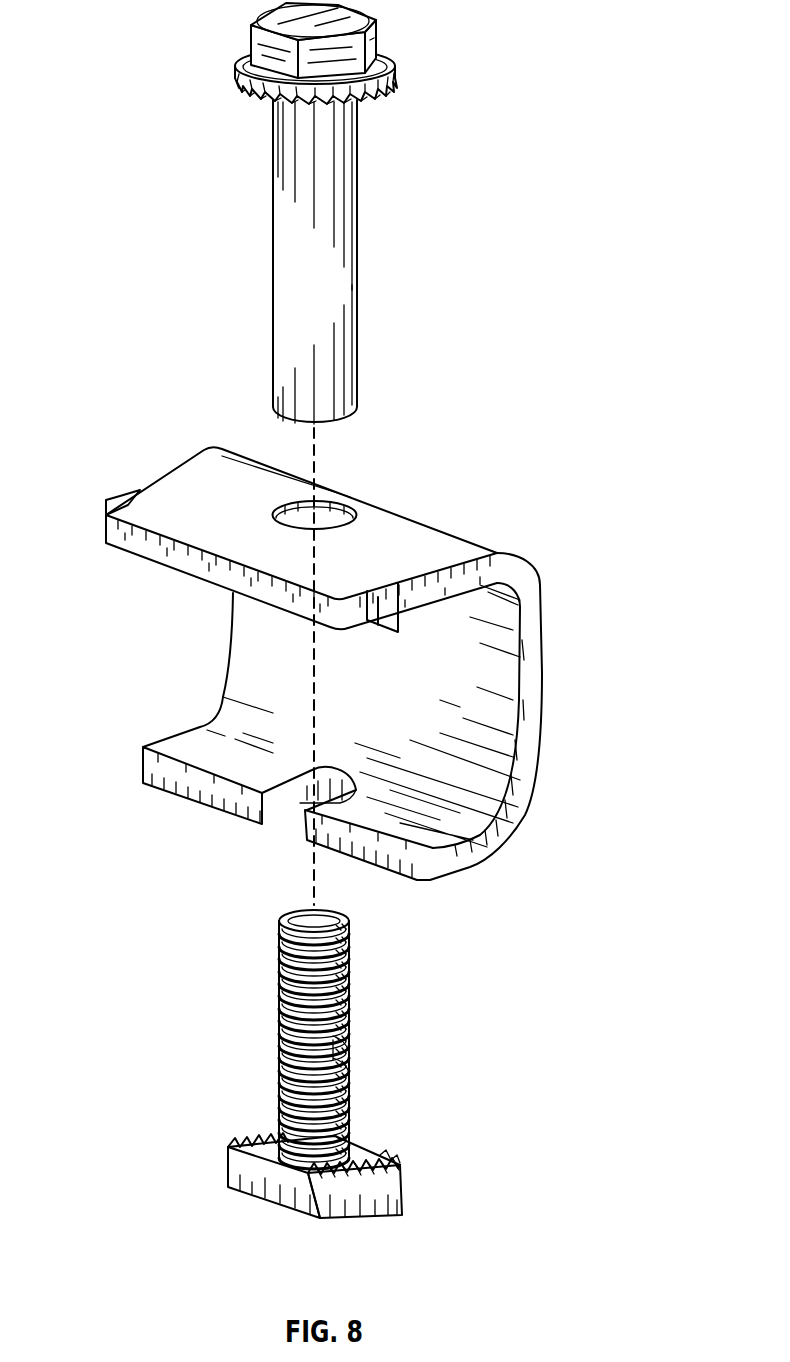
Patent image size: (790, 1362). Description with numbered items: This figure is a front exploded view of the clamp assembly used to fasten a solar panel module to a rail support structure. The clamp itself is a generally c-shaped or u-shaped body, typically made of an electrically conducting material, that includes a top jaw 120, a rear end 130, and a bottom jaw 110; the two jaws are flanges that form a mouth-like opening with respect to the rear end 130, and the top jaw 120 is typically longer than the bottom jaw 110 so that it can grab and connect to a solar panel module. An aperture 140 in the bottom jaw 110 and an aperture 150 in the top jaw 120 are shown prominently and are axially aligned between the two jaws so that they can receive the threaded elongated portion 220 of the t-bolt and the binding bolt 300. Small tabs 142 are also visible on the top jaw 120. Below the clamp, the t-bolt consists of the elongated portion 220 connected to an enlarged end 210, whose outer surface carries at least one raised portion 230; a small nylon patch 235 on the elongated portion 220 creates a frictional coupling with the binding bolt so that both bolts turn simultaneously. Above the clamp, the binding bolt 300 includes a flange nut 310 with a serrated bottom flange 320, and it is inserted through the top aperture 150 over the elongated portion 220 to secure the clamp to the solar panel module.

The bottom jaw 110 is at (470, 866).
The top jaw 120 is at (140, 557).
The rear end 130 is at (545, 675).
The aperture 140 is at (293, 803).
The tab 142 is at (113, 497).
The aperture 150 is at (357, 512).
The enlarged end 210 is at (356, 1179).
The elongated portion 220 is at (355, 1039).
The raised portion 230 is at (392, 1162).
The nylon patch 235 is at (343, 1047).
The binding bolt 300 is at (348, 213).
The flange nut 310 is at (378, 33).
The serrated bottom flange 320 is at (391, 95).